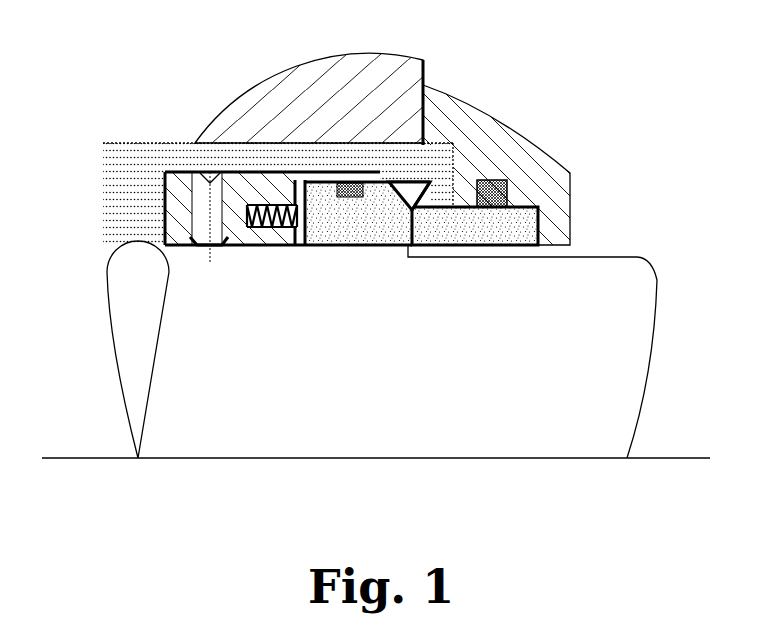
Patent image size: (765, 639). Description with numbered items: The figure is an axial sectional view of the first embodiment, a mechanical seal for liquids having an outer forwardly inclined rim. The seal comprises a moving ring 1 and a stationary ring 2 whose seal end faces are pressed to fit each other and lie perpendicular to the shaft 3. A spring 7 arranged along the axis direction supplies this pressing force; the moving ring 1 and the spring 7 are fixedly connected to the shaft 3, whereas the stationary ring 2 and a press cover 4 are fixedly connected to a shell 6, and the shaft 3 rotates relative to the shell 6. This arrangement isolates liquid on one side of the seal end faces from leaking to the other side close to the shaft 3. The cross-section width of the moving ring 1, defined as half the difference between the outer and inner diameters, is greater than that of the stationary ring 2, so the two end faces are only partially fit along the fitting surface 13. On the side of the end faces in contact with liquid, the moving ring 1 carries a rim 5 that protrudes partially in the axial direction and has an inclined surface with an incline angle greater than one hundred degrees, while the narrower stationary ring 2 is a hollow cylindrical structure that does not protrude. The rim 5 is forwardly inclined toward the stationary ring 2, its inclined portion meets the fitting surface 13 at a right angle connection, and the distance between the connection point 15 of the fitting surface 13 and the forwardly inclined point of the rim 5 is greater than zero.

The moving ring 1 is at (350, 222).
The stationary ring 2 is at (460, 223).
The shaft 3 is at (533, 297).
The press cover 4 is at (520, 165).
The rim 5 is at (462, 150).
The shell 6 is at (343, 92).
The spring 7 is at (262, 208).
The fitting surface 13 is at (412, 210).
The connection point 15 is at (412, 210).